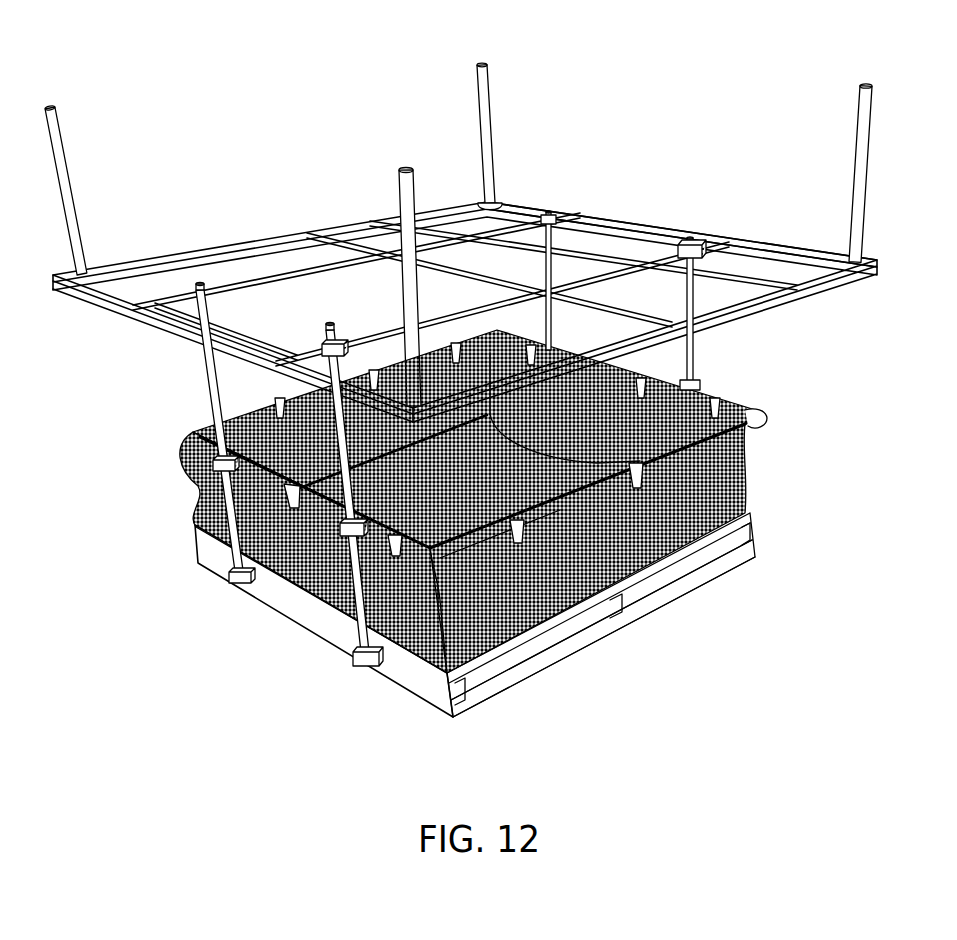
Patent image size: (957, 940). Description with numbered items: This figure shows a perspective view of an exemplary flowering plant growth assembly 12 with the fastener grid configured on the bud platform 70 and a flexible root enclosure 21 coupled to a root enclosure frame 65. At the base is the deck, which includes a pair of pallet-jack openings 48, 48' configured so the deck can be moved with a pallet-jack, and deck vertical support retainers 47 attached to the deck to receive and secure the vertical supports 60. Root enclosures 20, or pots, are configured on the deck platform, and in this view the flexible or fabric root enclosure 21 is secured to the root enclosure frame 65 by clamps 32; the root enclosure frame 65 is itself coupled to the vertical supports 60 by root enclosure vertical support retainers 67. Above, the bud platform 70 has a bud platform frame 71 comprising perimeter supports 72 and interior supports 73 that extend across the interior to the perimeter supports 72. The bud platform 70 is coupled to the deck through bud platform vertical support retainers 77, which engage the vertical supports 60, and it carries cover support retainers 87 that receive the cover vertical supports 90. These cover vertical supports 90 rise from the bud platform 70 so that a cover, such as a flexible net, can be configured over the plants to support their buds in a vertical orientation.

The flowering plant growth assembly 12 is at (200, 118).
The root enclosure 20 is at (743, 502).
The flexible root enclosure 21 is at (707, 457).
The clamp 32 is at (720, 390).
The deck vertical support retainer 47 is at (232, 578).
The pallet-jack opening 48 is at (601, 621).
The pallet-jack opening 48' is at (603, 628).
The vertical support 60 is at (217, 370).
The root enclosure frame 65 is at (757, 417).
The root enclosure vertical support retainer 67 is at (208, 476).
The bud platform 70 is at (132, 304).
The bud platform frame 71 is at (740, 247).
The perimeter support 72 is at (793, 243).
The interior support 73 is at (293, 275).
The bud platform vertical support retainer 77 is at (693, 237).
The cover support retainer 87 is at (488, 203).
The cover vertical support 90 is at (63, 188).